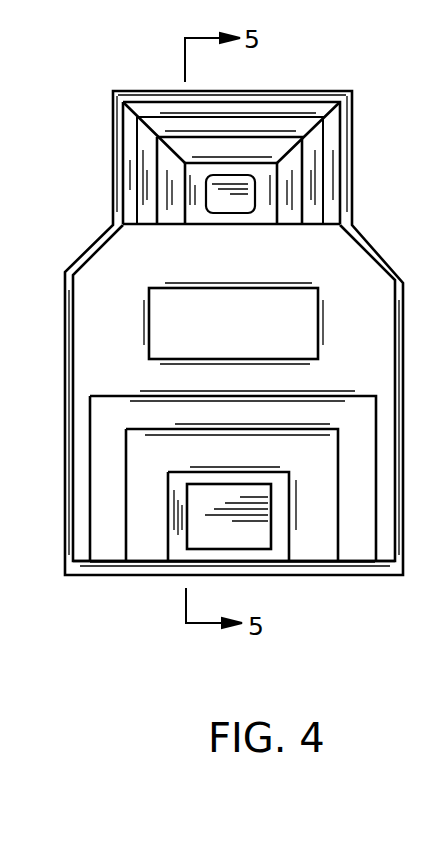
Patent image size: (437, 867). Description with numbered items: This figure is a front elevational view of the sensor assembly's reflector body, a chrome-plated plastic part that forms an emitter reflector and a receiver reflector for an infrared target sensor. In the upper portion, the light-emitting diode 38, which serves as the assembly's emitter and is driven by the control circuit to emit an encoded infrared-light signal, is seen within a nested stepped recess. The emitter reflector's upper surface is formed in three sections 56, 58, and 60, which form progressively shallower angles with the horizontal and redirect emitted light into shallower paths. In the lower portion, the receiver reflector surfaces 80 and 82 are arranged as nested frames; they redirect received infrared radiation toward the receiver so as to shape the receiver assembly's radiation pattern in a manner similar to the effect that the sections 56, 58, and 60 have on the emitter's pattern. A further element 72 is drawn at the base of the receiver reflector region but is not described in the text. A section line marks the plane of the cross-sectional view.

The light-emitting diode 38 is at (223, 206).
The first upper-surface section 56 is at (292, 213).
The second upper-surface section 58 is at (313, 169).
The third upper-surface section 60 is at (332, 132).
The base 72 is at (357, 562).
The receiver reflector surface 80 is at (321, 463).
The receiver reflector surface 82 is at (369, 429).